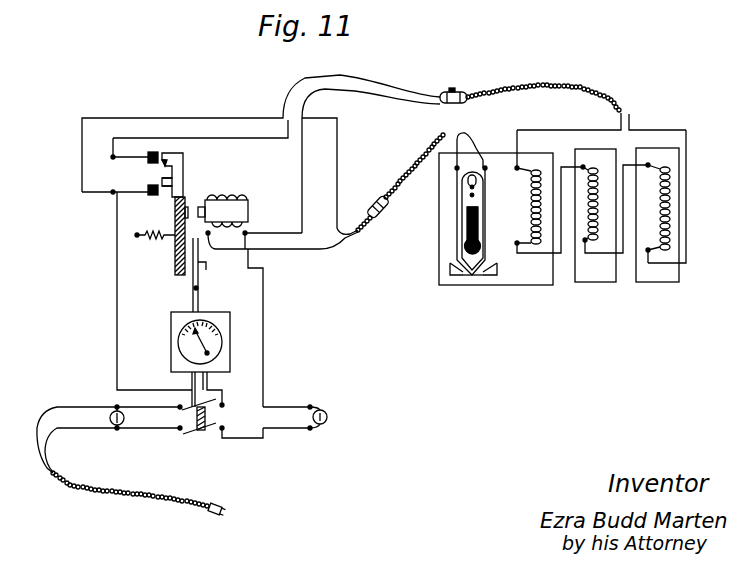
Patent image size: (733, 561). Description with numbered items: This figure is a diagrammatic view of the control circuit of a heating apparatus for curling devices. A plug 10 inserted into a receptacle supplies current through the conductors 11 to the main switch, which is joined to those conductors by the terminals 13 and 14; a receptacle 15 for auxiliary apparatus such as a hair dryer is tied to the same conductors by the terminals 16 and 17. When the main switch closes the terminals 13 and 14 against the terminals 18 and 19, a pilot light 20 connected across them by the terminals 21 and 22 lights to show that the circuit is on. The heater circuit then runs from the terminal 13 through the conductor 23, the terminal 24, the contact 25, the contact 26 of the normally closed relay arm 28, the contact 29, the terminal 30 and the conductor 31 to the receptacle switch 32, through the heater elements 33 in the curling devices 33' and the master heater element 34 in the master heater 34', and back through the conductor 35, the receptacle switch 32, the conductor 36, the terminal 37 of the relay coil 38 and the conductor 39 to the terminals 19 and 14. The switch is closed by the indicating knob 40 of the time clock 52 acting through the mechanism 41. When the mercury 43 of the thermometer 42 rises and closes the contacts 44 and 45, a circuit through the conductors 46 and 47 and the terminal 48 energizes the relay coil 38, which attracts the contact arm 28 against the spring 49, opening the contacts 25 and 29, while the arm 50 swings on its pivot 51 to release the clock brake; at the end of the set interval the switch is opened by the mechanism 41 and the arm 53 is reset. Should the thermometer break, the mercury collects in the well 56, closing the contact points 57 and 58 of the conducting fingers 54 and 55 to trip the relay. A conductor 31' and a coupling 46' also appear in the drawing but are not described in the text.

The plug 10 is at (208, 512).
The conductors 11 is at (100, 495).
The terminal 13 is at (180, 407).
The terminal 14 is at (180, 430).
The receptacle 15 is at (113, 425).
The terminal 16 is at (116, 405).
The terminal 17 is at (117, 431).
The terminal 18 is at (223, 406).
The terminal 19 is at (223, 430).
The pilot light 20 is at (328, 414).
The terminal 21 is at (168, 158).
The terminal 22 is at (311, 429).
The conductor 23 is at (116, 290).
The terminal 24 is at (111, 194).
The contact 25 is at (150, 196).
The contact 26 is at (172, 182).
The relay contact arm 28 is at (184, 158).
The contact 29 is at (153, 151).
The terminal 30 is at (112, 155).
The conductor 31 is at (261, 128).
The conductor 31' is at (675, 183).
The receptacle switch 32 is at (458, 88).
The heater elements 33 is at (652, 223).
The curling devices 33' is at (640, 232).
The master heater element 34 is at (549, 202).
The master heater 34' is at (497, 233).
The conductor 35 is at (575, 130).
The conductor 36 is at (303, 170).
The terminal 37 is at (248, 228).
The relay coil 38 is at (250, 204).
The conductor 39 is at (264, 290).
The indicating knob 40 is at (207, 353).
The connecting mechanism 41 is at (210, 378).
The thermometer 42 is at (465, 228).
The mercury 43 is at (455, 250).
The contact 44 is at (470, 187).
The contact 45 is at (470, 196).
The conductor 46 is at (377, 179).
The coupling 46' is at (378, 219).
The conductor 47 is at (443, 133).
The terminal 48 is at (218, 250).
The spring 49 is at (150, 238).
The arm 50 is at (203, 266).
The pivot 51 is at (199, 289).
The time clock 52 is at (171, 318).
The arm 53 is at (190, 383).
The conducting finger 54 is at (466, 211).
The conducting finger 55 is at (484, 205).
The well 56 is at (492, 278).
The contact point 57 is at (475, 280).
The contact point 58 is at (455, 276).